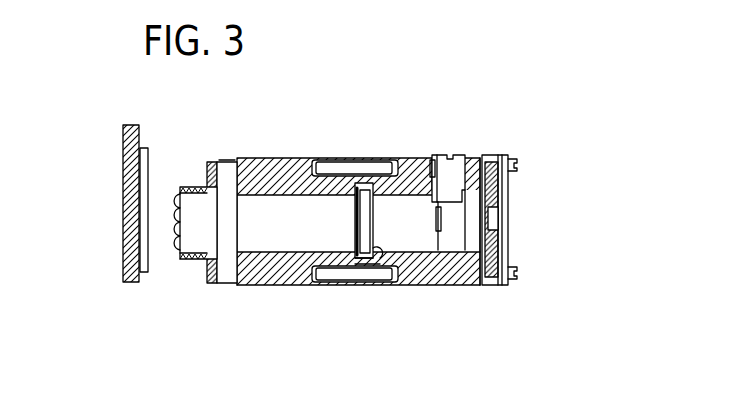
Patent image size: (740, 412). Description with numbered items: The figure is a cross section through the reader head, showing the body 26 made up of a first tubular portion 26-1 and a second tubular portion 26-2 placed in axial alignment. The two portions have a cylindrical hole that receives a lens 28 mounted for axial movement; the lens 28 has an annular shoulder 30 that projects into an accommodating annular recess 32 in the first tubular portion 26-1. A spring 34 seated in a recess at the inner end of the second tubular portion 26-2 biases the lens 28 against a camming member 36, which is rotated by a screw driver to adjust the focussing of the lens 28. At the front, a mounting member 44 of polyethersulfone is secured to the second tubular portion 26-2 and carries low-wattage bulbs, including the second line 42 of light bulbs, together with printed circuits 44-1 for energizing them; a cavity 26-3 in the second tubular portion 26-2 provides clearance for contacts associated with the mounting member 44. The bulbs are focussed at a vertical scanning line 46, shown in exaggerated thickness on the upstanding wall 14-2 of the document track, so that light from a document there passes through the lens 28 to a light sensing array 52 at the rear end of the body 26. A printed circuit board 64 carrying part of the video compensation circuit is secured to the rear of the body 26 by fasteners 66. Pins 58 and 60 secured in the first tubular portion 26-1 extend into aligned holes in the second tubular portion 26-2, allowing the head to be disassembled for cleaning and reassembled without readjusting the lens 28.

The upstanding wall 14-2 is at (125, 268).
The vertical scanning line 46 is at (147, 154).
The second line of light bulbs 42 is at (172, 205).
The mounting member 44 is at (211, 265).
The printed circuits 44-1 is at (222, 162).
The body 26 is at (260, 158).
The first tubular portion 26-1 is at (476, 287).
The second tubular portion 26-2 is at (263, 289).
The cavity 26-3 is at (228, 266).
The pin 58 is at (345, 163).
The pin 60 is at (333, 270).
The annular recess 32 is at (375, 195).
The spring 34 is at (357, 244).
The camming member 36 is at (452, 170).
The lens 28 is at (405, 231).
The annular shoulder 30 is at (377, 268).
The light sensing array 52 is at (495, 198).
The printed circuit board 64 is at (512, 224).
The fasteners 66 is at (518, 163).